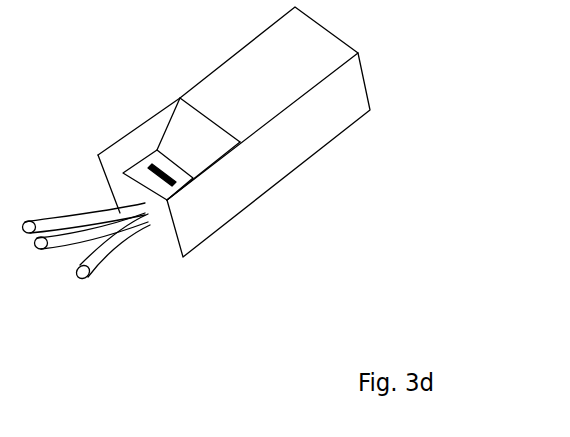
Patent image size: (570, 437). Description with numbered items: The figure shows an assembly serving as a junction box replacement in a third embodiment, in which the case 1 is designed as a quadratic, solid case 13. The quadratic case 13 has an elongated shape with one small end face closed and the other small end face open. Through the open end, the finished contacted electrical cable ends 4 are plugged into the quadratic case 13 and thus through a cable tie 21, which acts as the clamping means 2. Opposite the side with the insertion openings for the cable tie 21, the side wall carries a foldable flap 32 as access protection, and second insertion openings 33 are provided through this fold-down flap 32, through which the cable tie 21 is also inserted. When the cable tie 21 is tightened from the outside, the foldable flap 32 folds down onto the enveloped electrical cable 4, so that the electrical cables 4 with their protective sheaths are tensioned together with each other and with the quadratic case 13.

The case 1 is at (450, 184).
The clamping means 2 is at (5, 169).
The electrical cable ends 4 is at (95, 252).
The quadratic case 13 is at (313, 133).
The cable tie 21 is at (161, 185).
The foldable flap 32 is at (203, 145).
The second insertion openings 33 is at (158, 168).